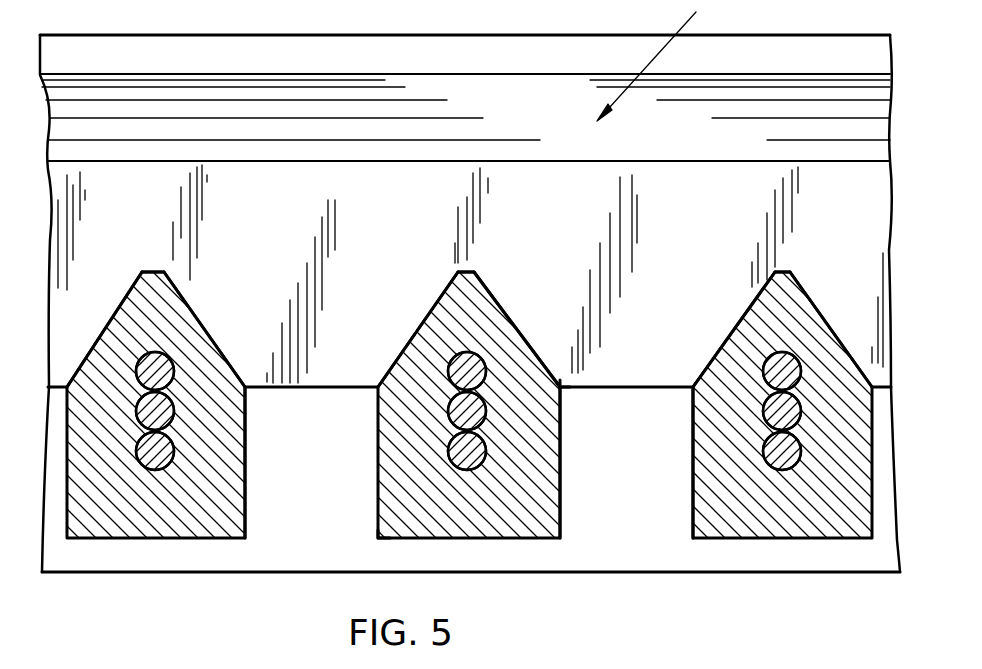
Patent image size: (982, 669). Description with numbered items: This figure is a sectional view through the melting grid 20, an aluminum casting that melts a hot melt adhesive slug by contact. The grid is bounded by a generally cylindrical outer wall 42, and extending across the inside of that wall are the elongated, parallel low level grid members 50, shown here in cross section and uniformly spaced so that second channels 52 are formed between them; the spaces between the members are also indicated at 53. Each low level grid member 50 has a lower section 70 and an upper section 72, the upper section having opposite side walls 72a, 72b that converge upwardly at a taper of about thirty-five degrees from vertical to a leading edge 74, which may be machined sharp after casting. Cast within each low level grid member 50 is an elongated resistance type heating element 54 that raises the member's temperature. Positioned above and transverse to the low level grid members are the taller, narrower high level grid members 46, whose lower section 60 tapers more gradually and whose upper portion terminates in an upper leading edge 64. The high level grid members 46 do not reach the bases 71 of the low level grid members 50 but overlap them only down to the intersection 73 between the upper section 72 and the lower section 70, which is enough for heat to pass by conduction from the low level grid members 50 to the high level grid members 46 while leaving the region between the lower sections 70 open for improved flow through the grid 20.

The melting grid 20 is at (266, 582).
The outer wall 42 is at (297, 40).
The high level grid members 46 is at (648, 60).
The low level grid members 50 is at (130, 517).
The second channels 52 is at (342, 332).
The channel between elements 53 is at (322, 394).
The heating elements 54 is at (164, 372).
The lower section 60 is at (269, 257).
The upper leading edge 64 is at (497, 73).
The lower section 70 is at (234, 500).
The bases 71 is at (384, 548).
The upper section 72 is at (107, 345).
The side wall 72a is at (112, 316).
The side wall 72b is at (188, 308).
The intersection 73 is at (563, 386).
The leading edge 74 is at (166, 268).